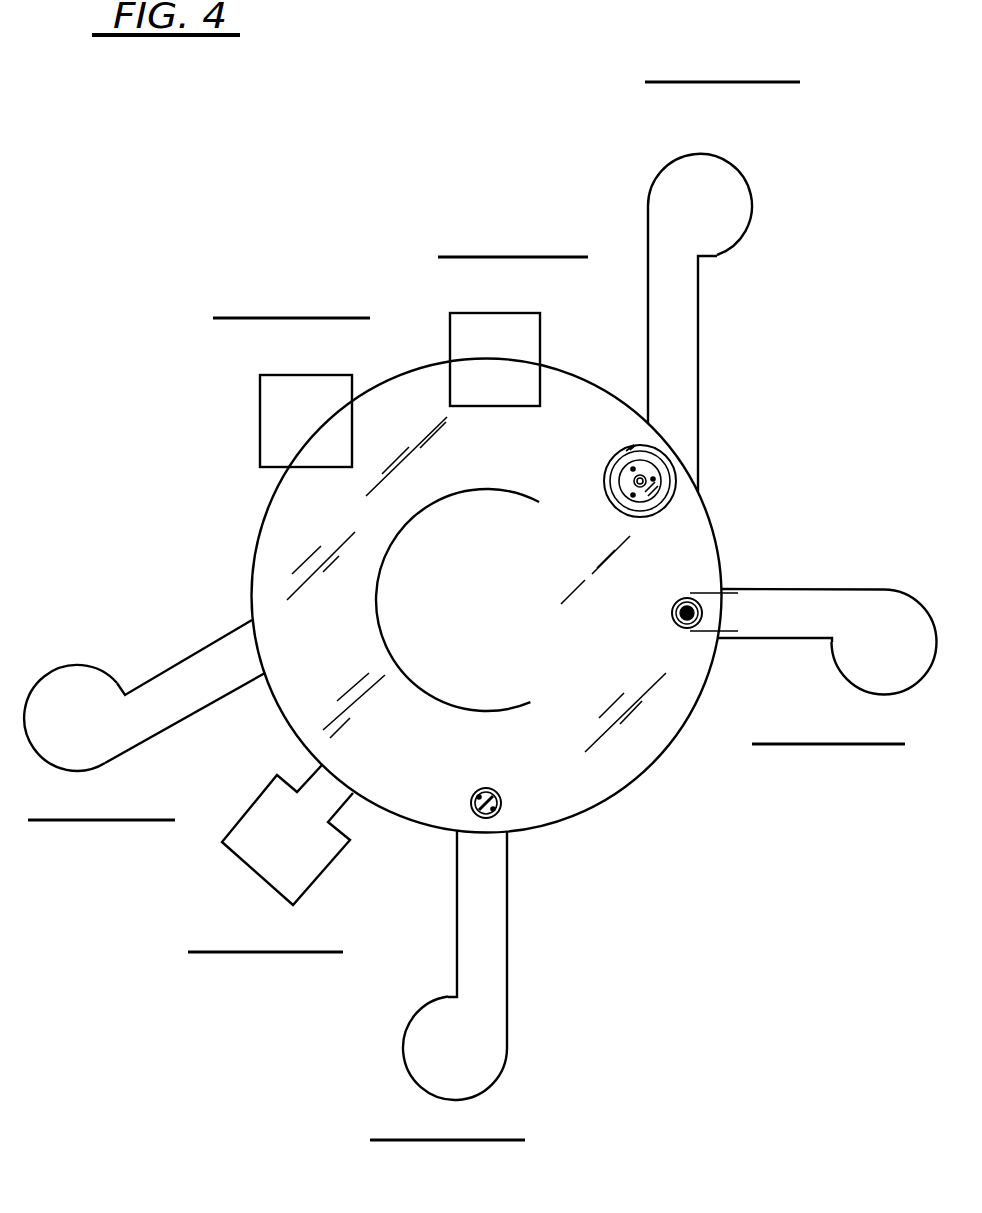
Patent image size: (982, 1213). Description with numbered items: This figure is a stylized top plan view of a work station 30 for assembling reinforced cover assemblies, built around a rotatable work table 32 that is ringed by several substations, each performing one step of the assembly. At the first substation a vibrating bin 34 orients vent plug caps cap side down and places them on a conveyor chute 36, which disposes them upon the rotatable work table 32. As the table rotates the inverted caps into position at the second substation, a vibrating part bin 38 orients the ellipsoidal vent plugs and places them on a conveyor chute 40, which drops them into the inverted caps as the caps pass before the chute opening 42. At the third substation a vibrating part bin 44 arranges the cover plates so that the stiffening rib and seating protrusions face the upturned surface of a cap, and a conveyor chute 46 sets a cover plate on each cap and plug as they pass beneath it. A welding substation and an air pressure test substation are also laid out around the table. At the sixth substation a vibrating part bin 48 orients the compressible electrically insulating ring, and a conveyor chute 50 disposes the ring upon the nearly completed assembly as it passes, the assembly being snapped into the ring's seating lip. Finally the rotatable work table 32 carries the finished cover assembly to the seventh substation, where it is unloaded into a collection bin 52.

The work station 30 is at (355, 206).
The rotatable work table 32 is at (506, 612).
The vibrating bin 34 is at (507, 1073).
The conveyor chute 36 is at (508, 921).
The vibrating part bin 38 is at (917, 600).
The conveyor chute 40 is at (818, 588).
The chute opening 42 is at (707, 567).
The vibrating part bin 44 is at (752, 206).
The conveyor chute 46 is at (698, 397).
The vibrating part bin 48 is at (100, 667).
The conveyor chute 50 is at (198, 648).
The collection bin 52 is at (327, 870).